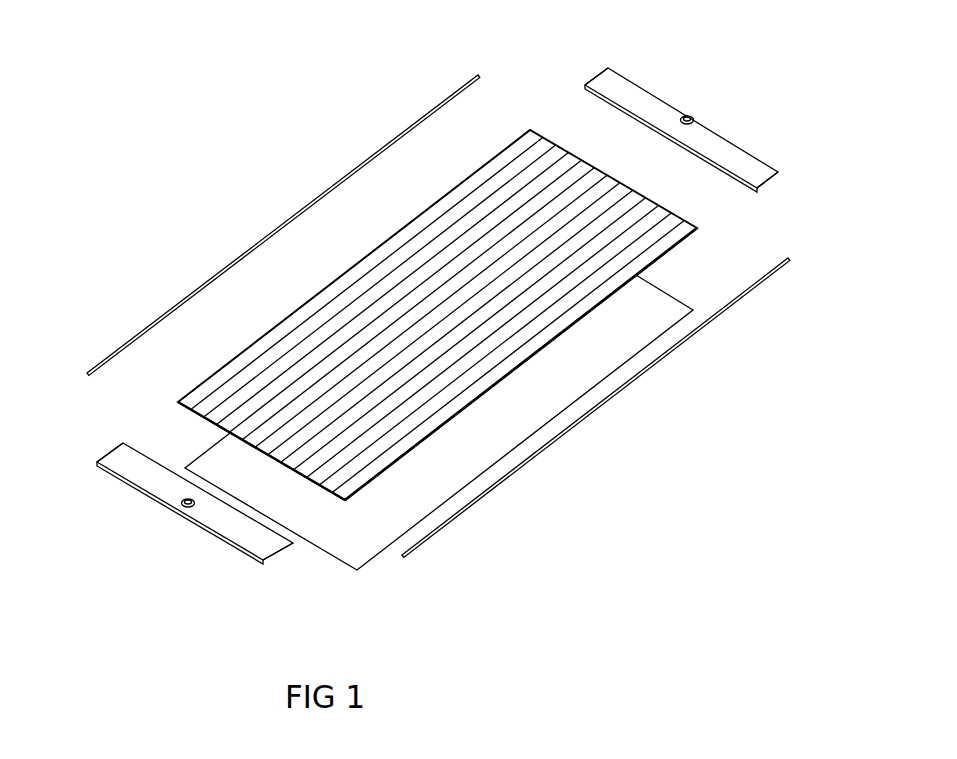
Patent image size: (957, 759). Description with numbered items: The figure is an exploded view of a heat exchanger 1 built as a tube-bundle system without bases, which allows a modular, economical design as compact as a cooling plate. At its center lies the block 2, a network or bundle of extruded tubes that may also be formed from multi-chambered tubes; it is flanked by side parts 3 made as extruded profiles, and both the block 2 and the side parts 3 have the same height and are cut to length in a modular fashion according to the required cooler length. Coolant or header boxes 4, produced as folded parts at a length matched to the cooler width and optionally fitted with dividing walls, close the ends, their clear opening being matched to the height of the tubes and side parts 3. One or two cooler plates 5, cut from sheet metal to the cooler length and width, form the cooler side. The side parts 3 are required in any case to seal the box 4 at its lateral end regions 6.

The heat exchanger 1 is at (267, 100).
The block of extruded tubes 2 is at (632, 250).
The side parts 3 is at (268, 223).
The coolant box 4 is at (710, 135).
The cooler plate 5 is at (355, 543).
The lateral end regions 6 is at (597, 78).